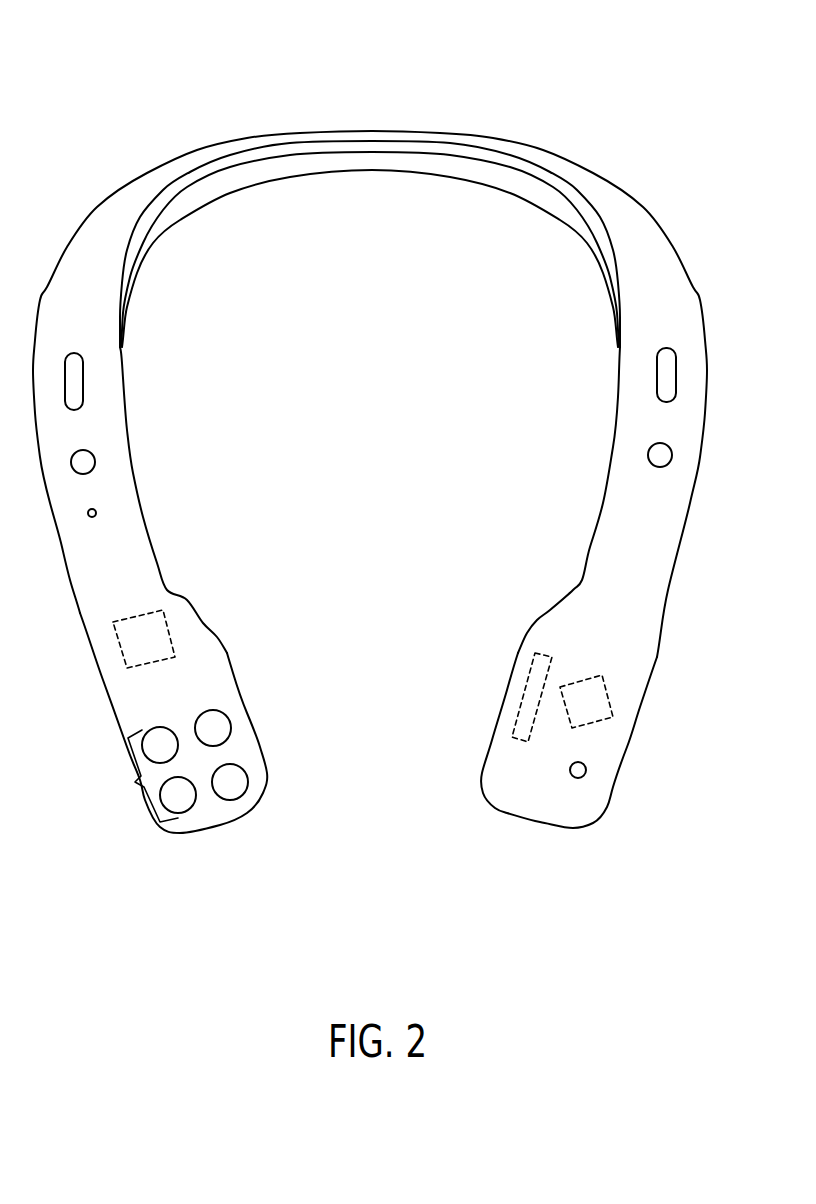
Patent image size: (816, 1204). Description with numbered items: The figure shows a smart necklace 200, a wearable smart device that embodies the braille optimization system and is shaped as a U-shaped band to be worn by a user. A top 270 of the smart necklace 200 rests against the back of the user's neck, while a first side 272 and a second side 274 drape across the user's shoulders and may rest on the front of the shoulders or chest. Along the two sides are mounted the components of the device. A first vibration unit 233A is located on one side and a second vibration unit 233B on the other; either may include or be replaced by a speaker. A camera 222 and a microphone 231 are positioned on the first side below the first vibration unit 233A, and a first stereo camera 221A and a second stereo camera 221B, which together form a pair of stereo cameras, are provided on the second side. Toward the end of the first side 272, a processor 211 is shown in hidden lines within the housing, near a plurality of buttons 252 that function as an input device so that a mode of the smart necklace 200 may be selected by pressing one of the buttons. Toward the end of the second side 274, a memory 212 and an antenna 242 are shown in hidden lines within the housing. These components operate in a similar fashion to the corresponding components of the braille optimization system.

The smart necklace 200 is at (107, 70).
The top 270 is at (375, 104).
The first side 272 is at (266, 823).
The second side 274 is at (606, 837).
The first vibration unit 233A is at (83, 368).
The second vibration unit 233B is at (657, 357).
The camera 222 is at (95, 458).
The microphone 231 is at (96, 513).
The first stereo camera 221A is at (648, 455).
The second stereo camera 221B is at (586, 770).
The processor 211 is at (170, 638).
The memory 212 is at (512, 700).
The antenna 242 is at (607, 705).
The plurality of buttons 252 is at (135, 782).